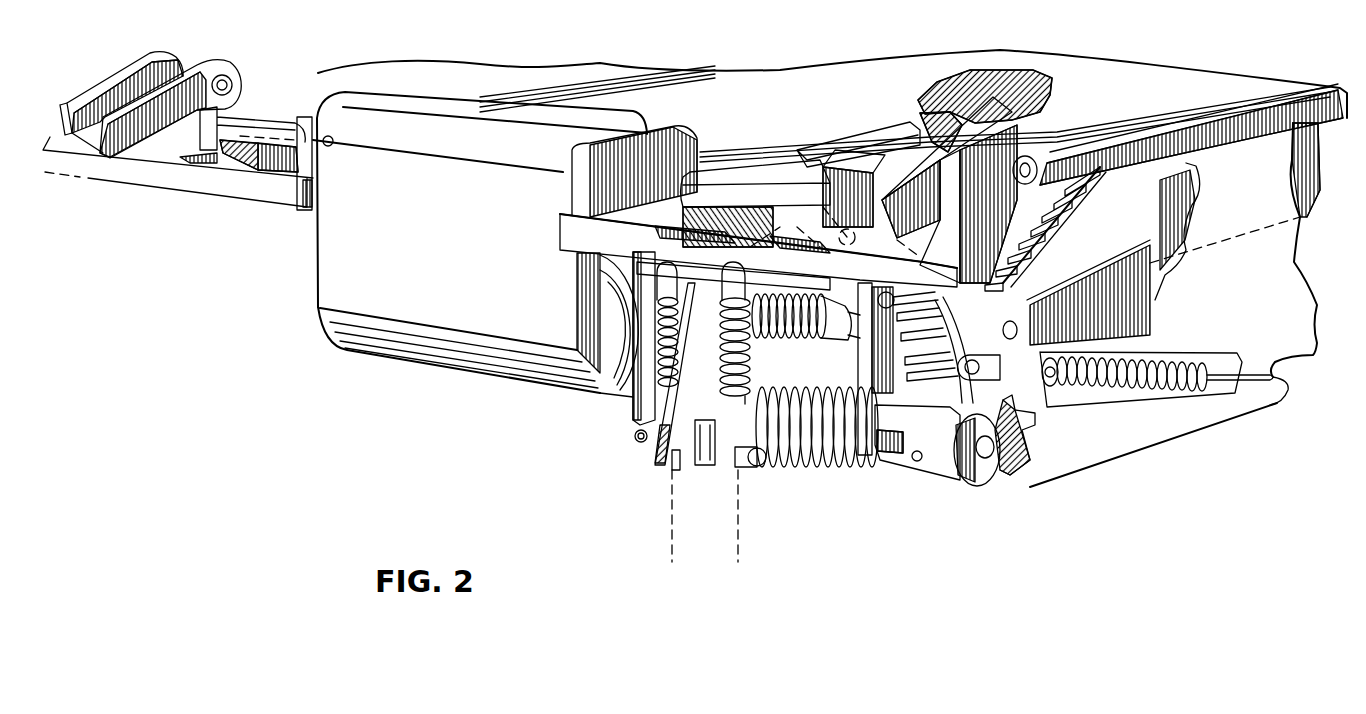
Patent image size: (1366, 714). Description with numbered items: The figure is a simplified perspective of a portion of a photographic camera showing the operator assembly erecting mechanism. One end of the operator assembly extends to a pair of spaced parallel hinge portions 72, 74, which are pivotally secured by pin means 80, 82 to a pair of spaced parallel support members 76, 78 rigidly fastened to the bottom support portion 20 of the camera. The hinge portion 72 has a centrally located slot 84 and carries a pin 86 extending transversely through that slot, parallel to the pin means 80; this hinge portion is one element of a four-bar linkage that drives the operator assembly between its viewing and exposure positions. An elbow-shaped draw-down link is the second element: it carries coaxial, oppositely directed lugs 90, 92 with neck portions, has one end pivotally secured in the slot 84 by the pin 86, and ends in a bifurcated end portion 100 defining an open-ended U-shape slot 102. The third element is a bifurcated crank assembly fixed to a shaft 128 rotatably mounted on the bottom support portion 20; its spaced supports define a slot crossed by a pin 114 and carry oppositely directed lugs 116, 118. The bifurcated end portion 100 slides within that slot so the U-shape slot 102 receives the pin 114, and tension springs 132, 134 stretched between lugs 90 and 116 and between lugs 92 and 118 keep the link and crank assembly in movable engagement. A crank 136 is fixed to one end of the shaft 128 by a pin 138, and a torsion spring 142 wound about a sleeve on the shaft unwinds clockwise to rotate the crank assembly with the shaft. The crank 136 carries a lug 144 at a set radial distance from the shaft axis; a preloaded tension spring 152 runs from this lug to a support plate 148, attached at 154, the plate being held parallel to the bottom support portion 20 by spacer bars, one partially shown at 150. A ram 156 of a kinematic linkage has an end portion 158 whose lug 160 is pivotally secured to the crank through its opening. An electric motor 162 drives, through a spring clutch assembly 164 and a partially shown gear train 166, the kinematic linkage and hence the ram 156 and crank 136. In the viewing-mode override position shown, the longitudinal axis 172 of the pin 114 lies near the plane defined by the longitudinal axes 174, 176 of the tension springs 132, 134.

The bottom support portion 20 is at (847, 463).
The hinge portion 72 is at (760, 168).
The hinge portion 74 is at (287, 122).
The support member 76 is at (848, 170).
The support member 78 is at (322, 133).
The pin means 80 is at (867, 170).
The pin means 82 is at (227, 113).
The slot 84 is at (752, 208).
The pin 86 is at (858, 243).
The lug 90 is at (661, 268).
The lug 92 is at (757, 276).
The bifurcated end portion 100 is at (660, 461).
The U-shape slot 102 is at (672, 473).
The pin 114 is at (703, 463).
The lug 116 is at (752, 456).
The lug 118 is at (640, 436).
The shaft 128 is at (978, 488).
The tension spring 132 is at (768, 385).
The tension spring 134 is at (653, 325).
The crank 136 is at (982, 403).
The pin 138 is at (917, 461).
The torsion spring 142 is at (800, 458).
The lug 144 is at (972, 369).
The support plate 148 is at (1288, 344).
The spacer bar 150 is at (900, 417).
The preloaded tension spring 152 is at (1173, 383).
The connection point 154 is at (1276, 383).
The ram 156 is at (1165, 203).
The end portion 158 is at (1030, 323).
The lug 160 is at (980, 330).
The electric motor 162 is at (437, 257).
The spring clutch assembly 164 is at (757, 334).
The gear train 166 is at (1080, 151).
The longitudinal axis 172 is at (613, 407).
The longitudinal axis 174 is at (740, 515).
The longitudinal axis 176 is at (670, 530).